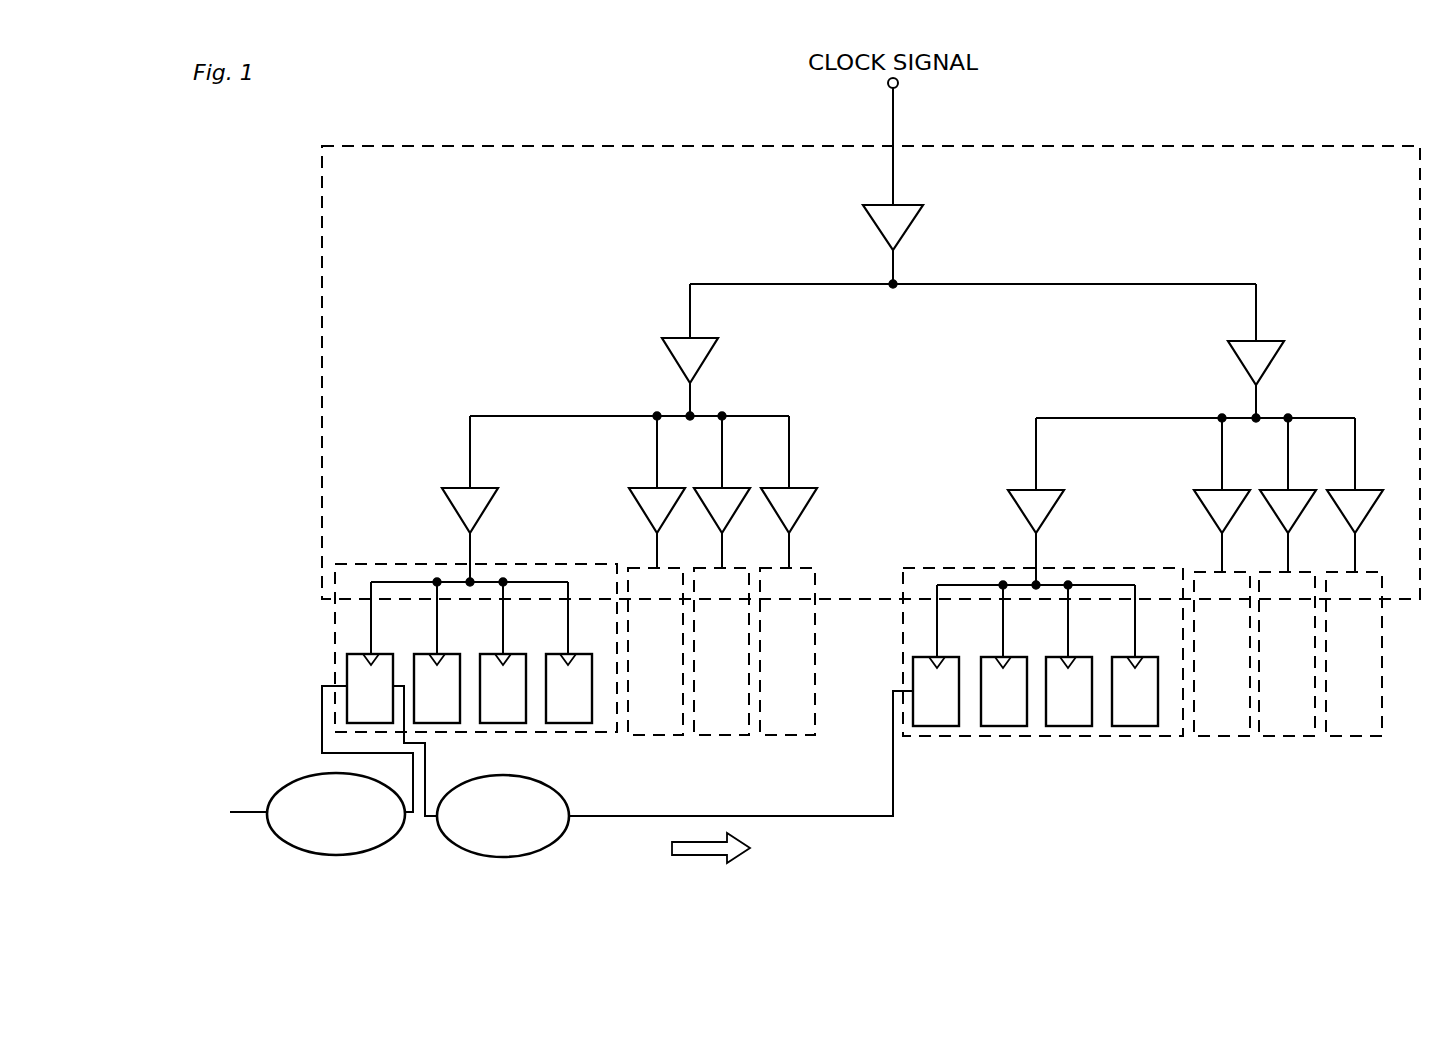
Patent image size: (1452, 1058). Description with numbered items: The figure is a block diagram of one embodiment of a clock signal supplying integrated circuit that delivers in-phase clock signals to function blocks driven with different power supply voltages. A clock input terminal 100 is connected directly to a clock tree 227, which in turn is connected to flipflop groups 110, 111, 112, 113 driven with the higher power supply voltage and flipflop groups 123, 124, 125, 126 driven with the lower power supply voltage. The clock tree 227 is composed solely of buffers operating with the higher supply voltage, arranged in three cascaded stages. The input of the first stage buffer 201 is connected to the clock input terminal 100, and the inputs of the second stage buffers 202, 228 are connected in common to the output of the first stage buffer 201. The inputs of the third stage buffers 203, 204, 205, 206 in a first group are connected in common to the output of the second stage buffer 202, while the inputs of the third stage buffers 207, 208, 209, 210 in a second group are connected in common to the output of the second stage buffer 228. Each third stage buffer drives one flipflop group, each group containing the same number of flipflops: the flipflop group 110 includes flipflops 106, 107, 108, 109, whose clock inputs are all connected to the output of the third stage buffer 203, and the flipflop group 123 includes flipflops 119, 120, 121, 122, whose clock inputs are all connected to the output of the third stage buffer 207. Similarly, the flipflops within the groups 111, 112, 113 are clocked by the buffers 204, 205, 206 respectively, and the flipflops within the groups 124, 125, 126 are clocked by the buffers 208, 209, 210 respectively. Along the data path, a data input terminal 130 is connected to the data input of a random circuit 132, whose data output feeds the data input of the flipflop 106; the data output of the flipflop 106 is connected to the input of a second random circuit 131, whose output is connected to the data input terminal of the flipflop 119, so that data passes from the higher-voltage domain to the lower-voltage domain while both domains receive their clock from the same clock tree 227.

The clock input terminal 100 is at (898, 86).
The first stage 3.3V-operating buffer 201 is at (907, 205).
The second stage 3.3V-operating buffer 202 is at (700, 338).
The second stage 3.3V-operating buffer 228 is at (1264, 341).
The third stage 3.3V-operating buffer 203 is at (482, 488).
The third stage 3.3V-operating buffer 204 is at (669, 488).
The third stage 3.3V-operating buffer 205 is at (734, 488).
The third stage 3.3V-operating buffer 206 is at (801, 488).
The third stage 3.3V-operating buffer 207 is at (1048, 490).
The third stage 3.3V-operating buffer 208 is at (1234, 490).
The third stage 3.3V-operating buffer 209 is at (1300, 490).
The third stage 3.3V-operating buffer 210 is at (1367, 490).
The 3.3V-operating flipflop group 110 is at (582, 564).
The 3.3V-operating flipflop group 111 is at (676, 568).
The 3.3V-operating flipflop group 112 is at (742, 568).
The 3.3V-operating flipflop group 113 is at (808, 568).
The 2.5V-operating flipflop group 123 is at (1148, 568).
The 2.5V-operating flipflop group 124 is at (1243, 572).
The 2.5V-operating flipflop group 125 is at (1308, 572).
The 2.5V-operating flipflop group 126 is at (1375, 572).
The 3.3V-operating flipflop 106 is at (379, 654).
The 3.3V-operating flipflop 107 is at (445, 654).
The 3.3V-operating flipflop 108 is at (511, 654).
The 3.3V-operating flipflop 109 is at (576, 654).
The 2.5V-operating flipflop 119 is at (945, 657).
The 2.5V-operating flipflop 120 is at (1011, 657).
The 2.5V-operating flipflop 121 is at (1076, 657).
The 2.5V-operating flipflop 122 is at (1143, 657).
The data input terminal 130 is at (257, 815).
The random circuit 131 is at (560, 787).
The random circuit 132 is at (393, 840).
The clock tree 227 is at (1202, 145).